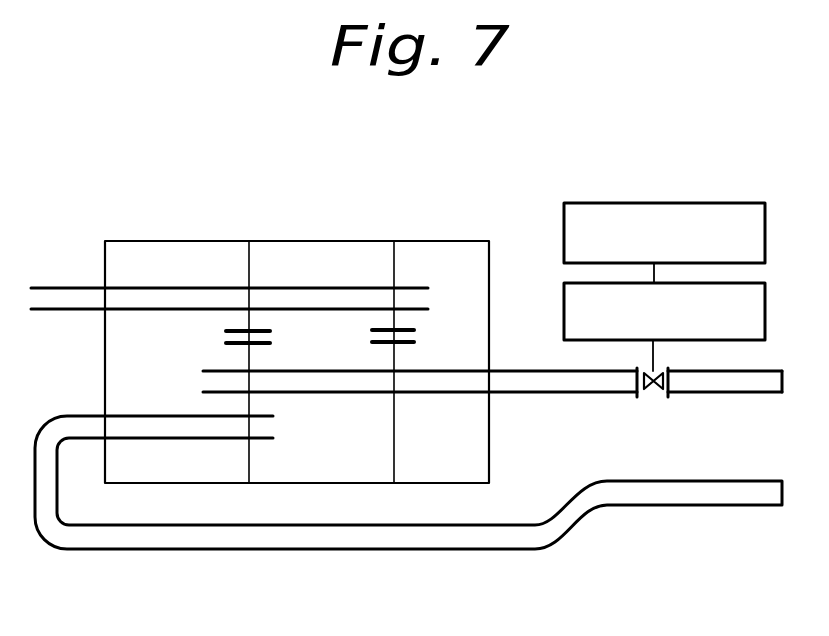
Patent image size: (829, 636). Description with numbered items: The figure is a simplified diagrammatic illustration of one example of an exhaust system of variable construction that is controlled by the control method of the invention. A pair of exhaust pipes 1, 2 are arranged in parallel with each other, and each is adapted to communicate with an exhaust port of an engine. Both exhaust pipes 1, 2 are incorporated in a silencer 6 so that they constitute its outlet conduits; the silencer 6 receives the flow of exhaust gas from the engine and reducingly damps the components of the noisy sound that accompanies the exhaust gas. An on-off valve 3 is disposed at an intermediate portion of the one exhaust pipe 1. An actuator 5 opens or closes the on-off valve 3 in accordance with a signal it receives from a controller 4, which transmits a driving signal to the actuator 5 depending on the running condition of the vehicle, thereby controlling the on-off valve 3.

The exhaust pipe 1 is at (533, 371).
The exhaust pipe 2 is at (351, 551).
The on-off valve 3 is at (649, 396).
The controller 4 is at (668, 203).
The actuator 5 is at (766, 322).
The silencer 6 is at (292, 241).